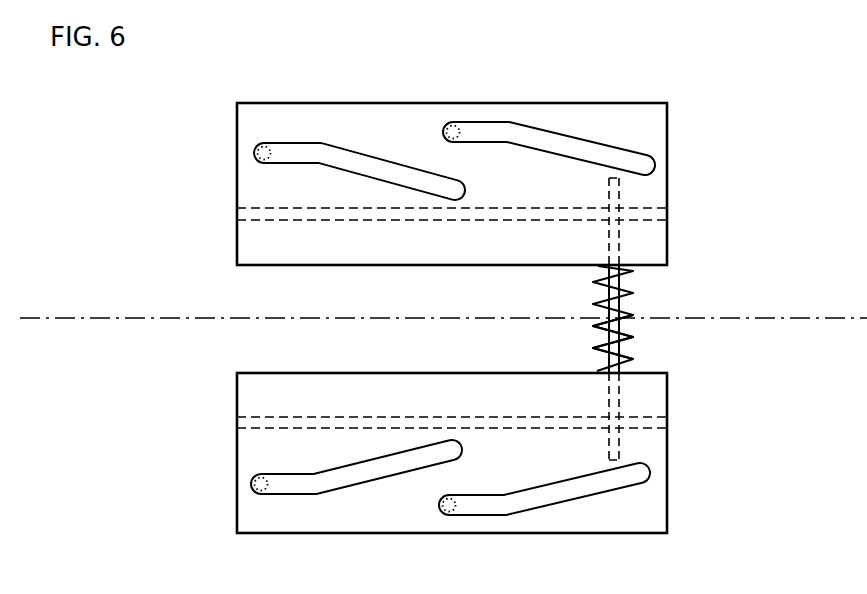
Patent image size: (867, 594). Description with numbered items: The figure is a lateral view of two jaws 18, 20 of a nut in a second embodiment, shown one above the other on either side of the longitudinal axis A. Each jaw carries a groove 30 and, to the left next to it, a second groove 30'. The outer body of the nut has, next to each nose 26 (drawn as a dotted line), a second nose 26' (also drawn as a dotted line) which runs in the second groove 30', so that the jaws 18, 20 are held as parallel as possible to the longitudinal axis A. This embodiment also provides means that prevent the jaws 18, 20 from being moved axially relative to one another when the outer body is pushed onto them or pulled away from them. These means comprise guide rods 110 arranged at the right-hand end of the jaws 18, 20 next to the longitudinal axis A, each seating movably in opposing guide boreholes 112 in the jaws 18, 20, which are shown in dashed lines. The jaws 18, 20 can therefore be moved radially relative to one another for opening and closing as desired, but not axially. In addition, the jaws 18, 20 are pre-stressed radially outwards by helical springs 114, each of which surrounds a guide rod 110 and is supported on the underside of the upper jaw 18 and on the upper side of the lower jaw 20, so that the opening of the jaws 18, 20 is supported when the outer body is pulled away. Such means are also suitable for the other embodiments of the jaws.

The jaw 18 is at (237, 141).
The jaw 20 is at (237, 404).
The nose 26 is at (490, 91).
The second nose 26' is at (301, 101).
The groove 30 is at (549, 104).
The second groove 30' is at (359, 116).
The guide rod 110 is at (625, 277).
The guide borehole 112 is at (618, 204).
The helical spring 114 is at (631, 337).
The longitudinal axis A is at (153, 316).